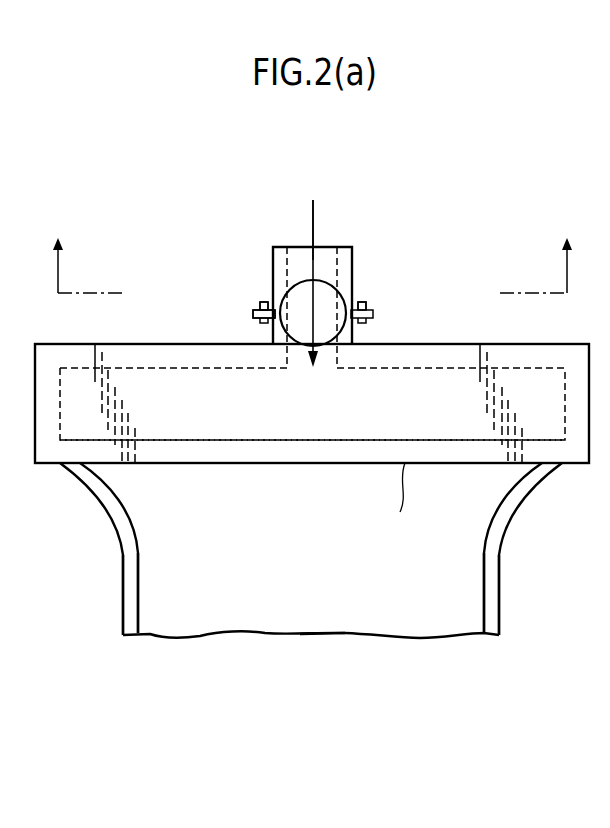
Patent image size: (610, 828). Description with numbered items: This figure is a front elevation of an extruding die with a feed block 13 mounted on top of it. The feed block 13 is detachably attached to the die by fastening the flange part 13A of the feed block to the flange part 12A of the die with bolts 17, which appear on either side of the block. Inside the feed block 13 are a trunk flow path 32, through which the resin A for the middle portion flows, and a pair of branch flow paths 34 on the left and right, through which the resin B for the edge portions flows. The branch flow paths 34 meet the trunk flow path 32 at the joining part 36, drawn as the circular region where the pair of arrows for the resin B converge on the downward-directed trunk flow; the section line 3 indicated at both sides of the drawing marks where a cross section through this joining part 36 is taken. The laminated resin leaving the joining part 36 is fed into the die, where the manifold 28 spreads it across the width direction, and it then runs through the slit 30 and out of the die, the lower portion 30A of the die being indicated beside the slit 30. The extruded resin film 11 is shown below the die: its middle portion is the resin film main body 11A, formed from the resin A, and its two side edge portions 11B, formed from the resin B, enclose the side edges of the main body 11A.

The resin film 11 is at (290, 610).
The resin film main body 11A is at (411, 623).
The edge portions of the resin film 11B is at (128, 552).
The flange part of the extruding die 12A is at (253, 315).
The feed block 13 is at (341, 236).
The flange part of the feed block 13A is at (257, 308).
The bolts 17 is at (362, 305).
The manifold 28 is at (333, 441).
The slit 30 is at (213, 455).
The housing block portion 30A is at (405, 506).
The trunk flow path 32 is at (336, 271).
The branch flow paths 34 is at (272, 287).
The joining part 36 is at (321, 272).
The resin for the middle portion A is at (313, 217).
The resin for the edge portions B is at (283, 298).
The line 3- 3 is at (315, 246).